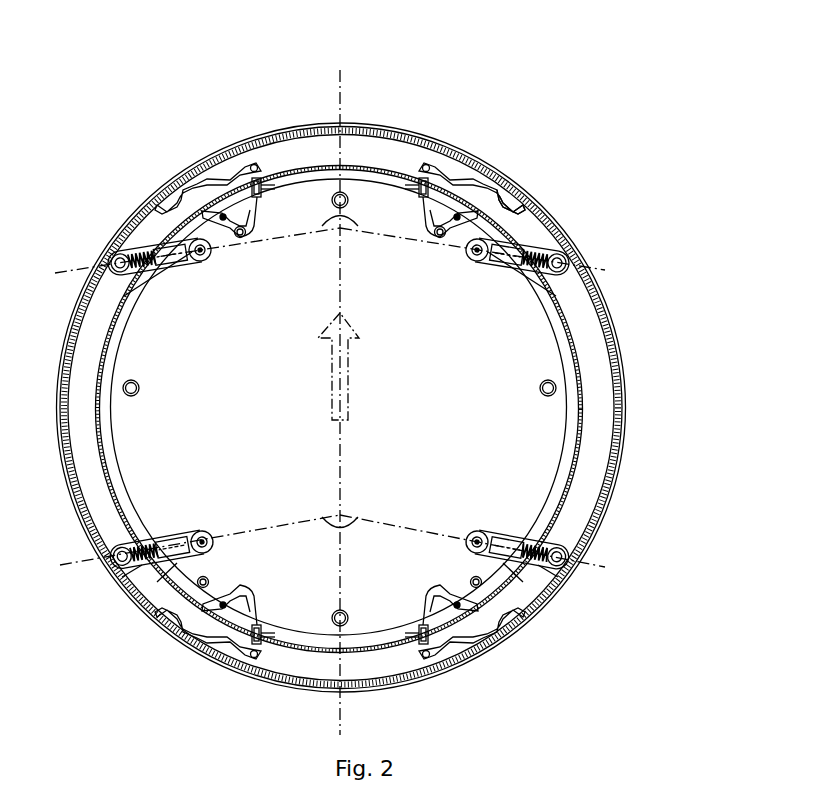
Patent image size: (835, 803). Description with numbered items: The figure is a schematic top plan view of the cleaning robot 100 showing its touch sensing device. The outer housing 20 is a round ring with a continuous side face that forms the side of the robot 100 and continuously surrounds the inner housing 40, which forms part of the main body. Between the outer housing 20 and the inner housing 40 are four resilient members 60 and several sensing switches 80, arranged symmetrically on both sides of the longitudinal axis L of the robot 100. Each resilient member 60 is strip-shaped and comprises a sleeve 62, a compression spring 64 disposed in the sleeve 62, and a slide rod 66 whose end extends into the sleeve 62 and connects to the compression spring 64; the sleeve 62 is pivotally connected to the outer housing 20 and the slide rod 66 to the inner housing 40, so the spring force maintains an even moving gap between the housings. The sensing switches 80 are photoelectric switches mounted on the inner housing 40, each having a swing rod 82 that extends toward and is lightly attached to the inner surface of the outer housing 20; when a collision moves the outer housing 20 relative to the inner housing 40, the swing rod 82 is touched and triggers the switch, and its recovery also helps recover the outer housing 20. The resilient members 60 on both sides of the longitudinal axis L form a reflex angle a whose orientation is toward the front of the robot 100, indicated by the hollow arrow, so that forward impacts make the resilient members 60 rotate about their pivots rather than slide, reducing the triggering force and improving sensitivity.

The cleaning robot 100 is at (460, 88).
The outer housing 20 is at (622, 418).
The inner housing 40 is at (547, 358).
The resilient member 60 is at (349, 390).
The sleeve 62 is at (566, 540).
The compression spring 64 is at (540, 572).
The slide rod 66 is at (495, 537).
The sensing switch 80 is at (347, 413).
The swing rod 82 is at (520, 207).
The longitudinal axis L is at (340, 122).
The reflex angle a is at (333, 221).